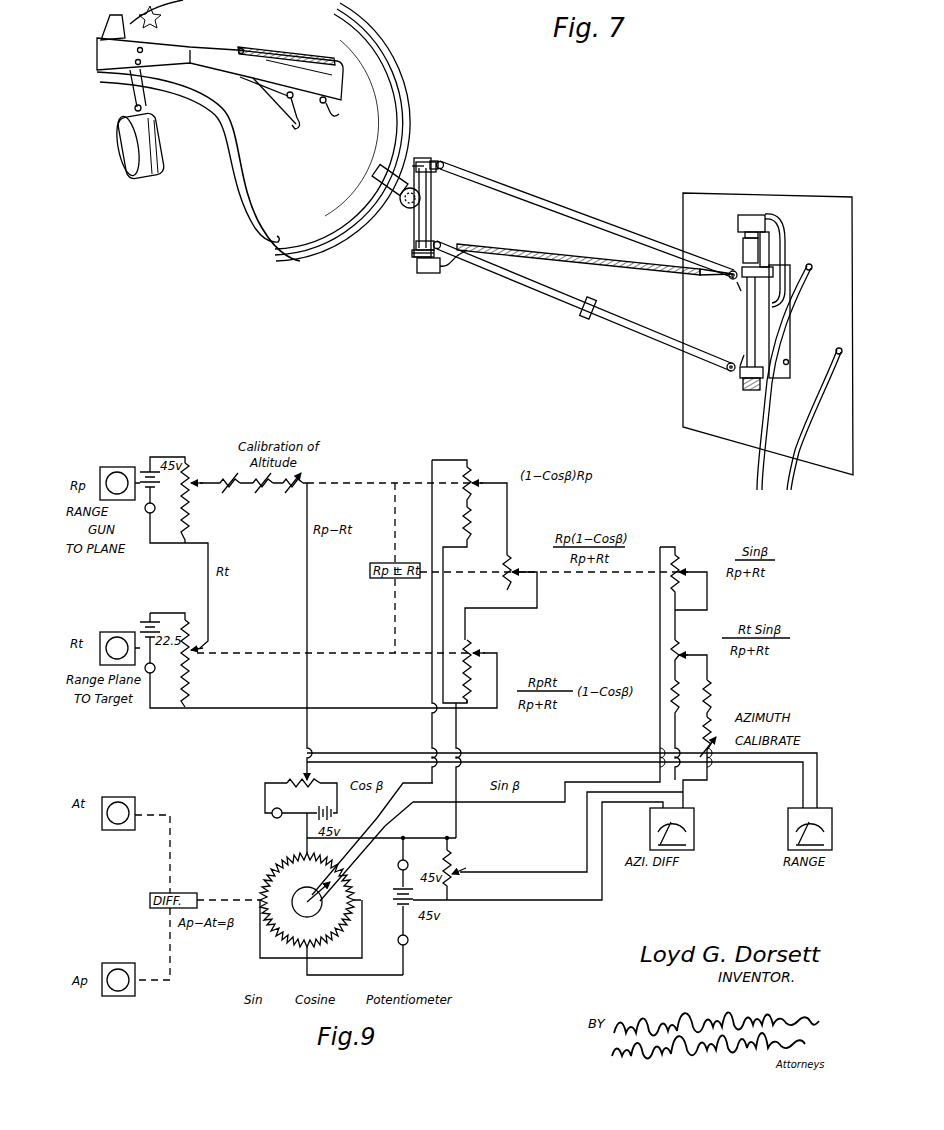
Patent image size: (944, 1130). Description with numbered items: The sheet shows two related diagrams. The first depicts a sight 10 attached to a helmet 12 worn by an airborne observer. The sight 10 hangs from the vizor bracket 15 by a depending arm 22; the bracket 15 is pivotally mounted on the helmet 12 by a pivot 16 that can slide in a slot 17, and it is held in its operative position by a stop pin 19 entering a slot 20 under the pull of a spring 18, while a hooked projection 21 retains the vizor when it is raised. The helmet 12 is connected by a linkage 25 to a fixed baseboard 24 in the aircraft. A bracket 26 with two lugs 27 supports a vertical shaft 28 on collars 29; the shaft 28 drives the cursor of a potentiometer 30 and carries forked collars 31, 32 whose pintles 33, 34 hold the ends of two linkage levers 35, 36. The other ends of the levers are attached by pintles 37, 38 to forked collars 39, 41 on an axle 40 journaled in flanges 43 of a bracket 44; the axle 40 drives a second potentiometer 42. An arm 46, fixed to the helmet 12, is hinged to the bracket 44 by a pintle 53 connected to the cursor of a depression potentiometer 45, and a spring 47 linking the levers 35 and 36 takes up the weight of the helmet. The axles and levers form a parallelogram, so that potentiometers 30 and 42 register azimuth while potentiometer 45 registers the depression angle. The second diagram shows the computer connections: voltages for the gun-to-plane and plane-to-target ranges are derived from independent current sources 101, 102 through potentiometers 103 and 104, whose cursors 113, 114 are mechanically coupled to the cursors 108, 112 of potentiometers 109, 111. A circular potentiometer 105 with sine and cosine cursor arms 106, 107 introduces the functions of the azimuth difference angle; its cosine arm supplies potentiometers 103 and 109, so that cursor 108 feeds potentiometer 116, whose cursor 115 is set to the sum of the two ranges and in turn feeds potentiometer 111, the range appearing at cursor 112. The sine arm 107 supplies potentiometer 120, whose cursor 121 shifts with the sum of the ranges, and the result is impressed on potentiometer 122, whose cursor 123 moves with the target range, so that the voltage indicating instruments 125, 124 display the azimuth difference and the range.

In FIG. 7, the sight 10 is at (150, 152).
In FIG. 7, the helmet 12 is at (397, 93).
In FIG. 7, the vizor bracket 15 is at (165, 49).
In FIG. 7, the pivot 16 is at (326, 108).
In FIG. 7, the slot 17 is at (333, 101).
In FIG. 7, the spring 18 is at (281, 49).
In FIG. 7, the stop pin 19 is at (289, 101).
In FIG. 7, the slot 20 is at (286, 97).
In FIG. 7, the hooked projection 21 is at (293, 128).
In FIG. 7, the depending arm 22 is at (130, 95).
In FIG. 7, the baseboard 24 is at (824, 458).
In FIG. 7, the linkage 25 is at (585, 258).
In FIG. 7, the bracket 26 is at (791, 327).
In FIG. 7, the lugs 27 is at (745, 268).
In FIG. 7, the vertical shaft 28 is at (746, 315).
In FIG. 7, the collars 29 is at (745, 246).
In FIG. 7, the potentiometer 30 is at (746, 214).
In FIG. 7, the forked collar member 31 is at (739, 286).
In FIG. 7, the forked collar member 32 is at (741, 357).
In FIG. 7, the pintle 33 is at (728, 278).
In FIG. 7, the pintle 34 is at (727, 371).
In FIG. 7, the linkage lever 35 is at (604, 228).
In FIG. 7, the linkage lever 36 is at (622, 317).
In FIG. 7, the pintle 37 is at (444, 165).
In FIG. 7, the pintle 38 is at (439, 242).
In FIG. 7, the forked collar 39 is at (434, 163).
In FIG. 7, the axle 40 is at (432, 207).
In FIG. 7, the forked collar 41 is at (416, 257).
In FIG. 7, the potentiometer 42 is at (430, 274).
In FIG. 7, the flanges 43 is at (426, 162).
In FIG. 7, the bracket 44 is at (417, 250).
In FIG. 7, the potentiometer 45 is at (405, 206).
In FIG. 7, the arm 46 is at (415, 160).
In FIG. 7, the spring 47 is at (503, 247).
In FIG. 7, the pintle 53 is at (417, 232).
In FIG. 9, the source of current 101 is at (146, 474).
In FIG. 9, the source of current 102 is at (143, 624).
In FIG. 9, the potentiometer 103 is at (194, 503).
In FIG. 9, the potentiometer 104 is at (184, 661).
In FIG. 9, the circular potentiometer 105 is at (287, 868).
In FIG. 9, the sine cursor 106 is at (275, 882).
In FIG. 9, the cosine cursor 107 is at (332, 893).
In FIG. 9, the cursor 108 is at (474, 481).
In FIG. 9, the potentiometer 109 is at (471, 499).
In FIG. 9, the potentiometer 111 is at (461, 653).
In FIG. 9, the cursor 112 is at (486, 653).
In FIG. 9, the cursor 113 is at (191, 479).
In FIG. 9, the cursor 114 is at (198, 656).
In FIG. 9, the cursor 115 is at (520, 568).
In FIG. 9, the potentiometer 116 is at (504, 584).
In FIG. 9, the potentiometer 120 is at (691, 549).
In FIG. 9, the potentiometer tap 121 is at (685, 577).
In FIG. 9, the potentiometer 122 is at (673, 651).
In FIG. 9, the potentiometer tap 123 is at (690, 657).
In FIG. 9, the voltage indicating instrument 124 is at (790, 846).
In FIG. 9, the voltage indicating instrument 125 is at (682, 838).